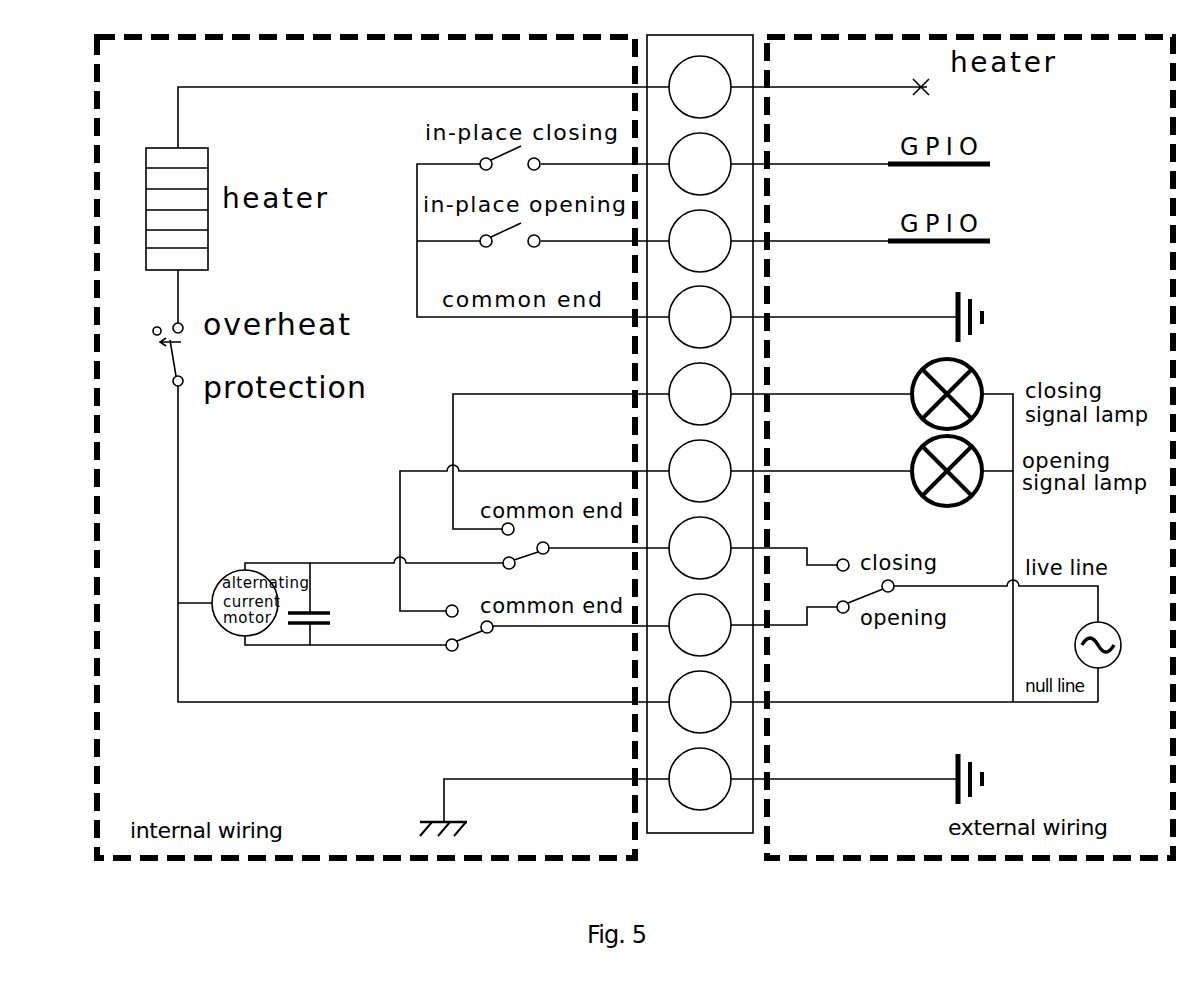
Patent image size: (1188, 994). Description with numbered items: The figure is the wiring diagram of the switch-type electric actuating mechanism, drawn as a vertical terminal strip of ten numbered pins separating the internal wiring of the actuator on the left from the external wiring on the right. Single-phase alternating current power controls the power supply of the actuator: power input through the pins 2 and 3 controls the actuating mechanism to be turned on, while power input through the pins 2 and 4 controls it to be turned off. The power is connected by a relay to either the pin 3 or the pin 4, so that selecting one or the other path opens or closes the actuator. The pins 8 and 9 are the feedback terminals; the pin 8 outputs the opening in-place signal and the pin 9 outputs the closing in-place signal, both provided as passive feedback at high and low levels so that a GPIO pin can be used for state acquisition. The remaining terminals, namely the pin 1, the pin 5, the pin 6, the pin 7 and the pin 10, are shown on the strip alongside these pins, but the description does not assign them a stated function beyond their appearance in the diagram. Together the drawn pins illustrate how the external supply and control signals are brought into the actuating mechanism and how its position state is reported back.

The terminal 1 (earth ground) 1 is at (700, 779).
The pin 2 is at (700, 702).
The pin 3 is at (700, 625).
The pin 4 is at (700, 548).
The terminal 5 (opening signal lamp) 5 is at (700, 471).
The terminal 6 (closing signal lamp) 6 is at (700, 394).
The terminal 7 (common end / ground) 7 is at (700, 317).
The pin 8 is at (700, 241).
The pin 9 is at (700, 164).
The terminal 10 (heater) 10 is at (700, 87).